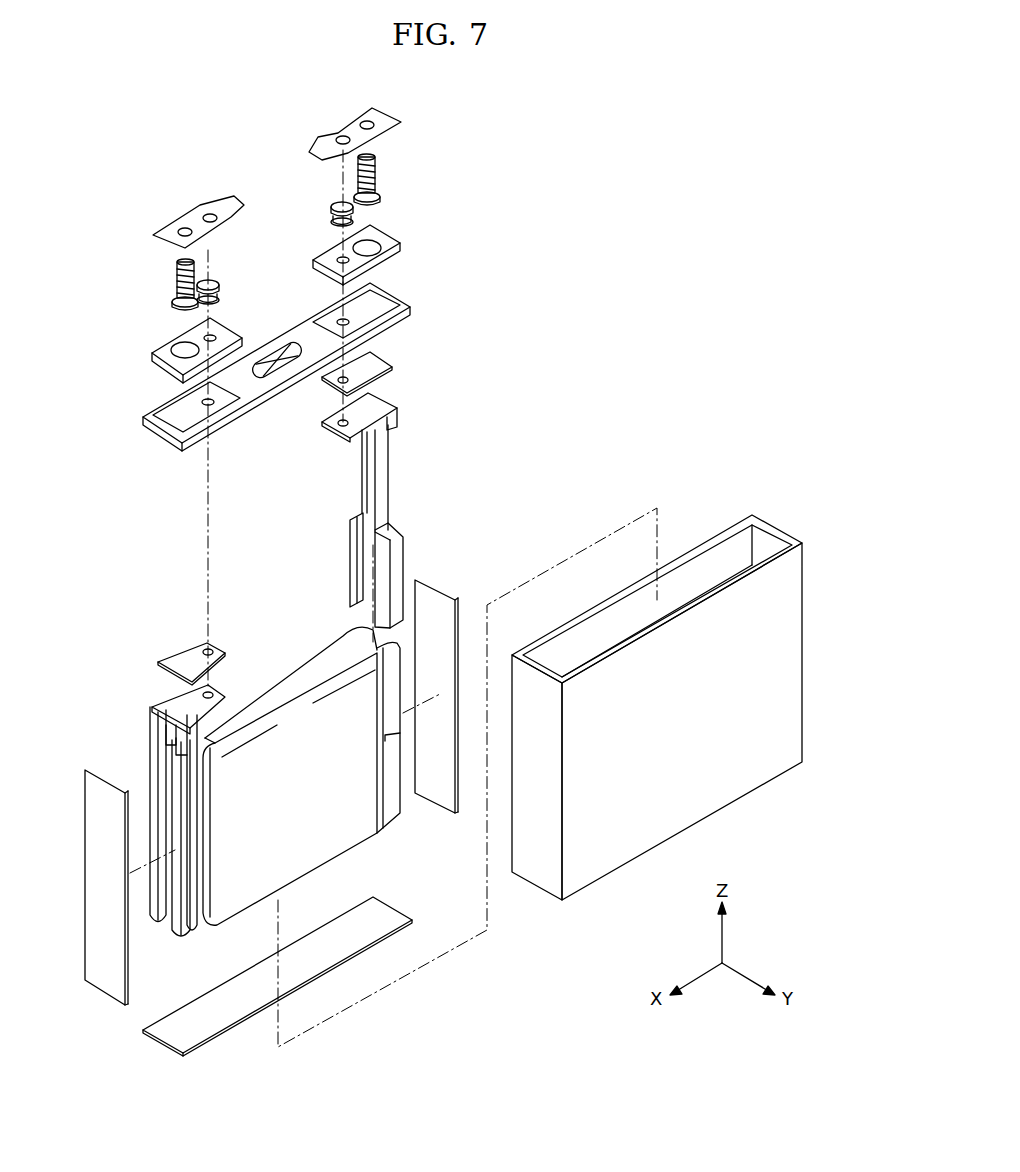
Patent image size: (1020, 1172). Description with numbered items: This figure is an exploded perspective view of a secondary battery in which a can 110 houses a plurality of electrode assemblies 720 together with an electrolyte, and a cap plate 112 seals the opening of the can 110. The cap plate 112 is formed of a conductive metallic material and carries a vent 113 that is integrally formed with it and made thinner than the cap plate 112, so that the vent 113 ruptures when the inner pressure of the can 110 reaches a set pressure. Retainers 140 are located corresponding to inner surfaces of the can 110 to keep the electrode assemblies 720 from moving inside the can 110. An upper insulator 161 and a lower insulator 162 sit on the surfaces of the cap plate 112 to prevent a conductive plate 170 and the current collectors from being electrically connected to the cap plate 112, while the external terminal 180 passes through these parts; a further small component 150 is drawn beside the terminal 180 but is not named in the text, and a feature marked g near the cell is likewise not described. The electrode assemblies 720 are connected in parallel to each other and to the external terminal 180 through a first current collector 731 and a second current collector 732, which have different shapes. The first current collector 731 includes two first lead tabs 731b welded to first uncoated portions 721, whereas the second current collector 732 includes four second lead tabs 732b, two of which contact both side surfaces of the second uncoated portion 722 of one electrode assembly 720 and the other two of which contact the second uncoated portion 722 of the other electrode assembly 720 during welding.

The can 110 is at (593, 867).
The cap plate 112 is at (290, 335).
The vent 113 is at (267, 350).
The retainer 140 is at (445, 797).
The nut 150 is at (333, 204).
The upper insulator 161 is at (388, 235).
The lower insulator 162 is at (382, 367).
The conductive plate 170 is at (382, 120).
The external terminal 180 is at (377, 172).
The electrode assemblies 720 is at (309, 760).
The first uncoated portions 721 is at (390, 813).
The second uncoated portion 722 is at (197, 930).
The first current collector 731 is at (376, 510).
The first lead tabs 731b is at (365, 494).
The second current collector 732 is at (153, 815).
The second lead tabs 732b is at (160, 730).
The gap g is at (386, 742).